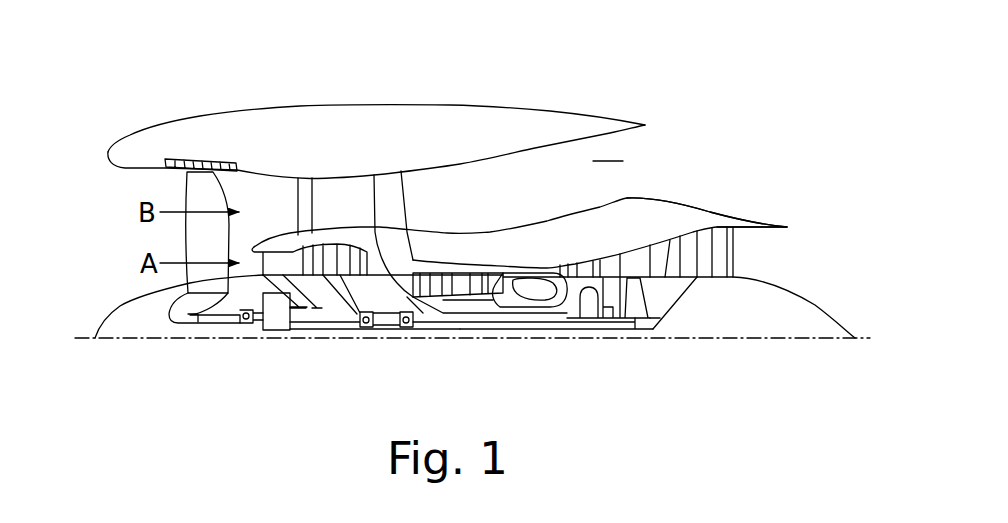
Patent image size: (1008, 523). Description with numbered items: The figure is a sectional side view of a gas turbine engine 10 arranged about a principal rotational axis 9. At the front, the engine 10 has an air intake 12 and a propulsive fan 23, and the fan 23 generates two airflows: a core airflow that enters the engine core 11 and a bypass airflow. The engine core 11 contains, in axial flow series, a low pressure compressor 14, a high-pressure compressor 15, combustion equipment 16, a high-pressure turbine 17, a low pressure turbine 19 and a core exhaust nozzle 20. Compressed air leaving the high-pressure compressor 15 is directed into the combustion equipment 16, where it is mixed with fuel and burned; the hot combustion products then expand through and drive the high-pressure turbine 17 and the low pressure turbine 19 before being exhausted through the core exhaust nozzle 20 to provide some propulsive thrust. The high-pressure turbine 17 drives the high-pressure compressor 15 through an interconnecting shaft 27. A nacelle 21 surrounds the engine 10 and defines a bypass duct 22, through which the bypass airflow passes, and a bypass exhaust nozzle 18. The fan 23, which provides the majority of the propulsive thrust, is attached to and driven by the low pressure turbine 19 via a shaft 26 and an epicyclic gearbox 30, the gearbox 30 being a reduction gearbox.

The principal rotational axis 9 is at (755, 340).
The gas turbine engine 10 is at (157, 115).
The engine core 11 is at (545, 245).
The air intake 12 is at (115, 184).
The low pressure compressor 14 is at (333, 260).
The high-pressure compressor 15 is at (467, 283).
The combustion equipment 16 is at (530, 284).
The high-pressure turbine 17 is at (587, 268).
The bypass exhaust nozzle 18 is at (748, 117).
The low pressure turbine 19 is at (707, 265).
The core exhaust nozzle 20 is at (796, 263).
The nacelle 21 is at (387, 118).
The bypass duct 22 is at (439, 204).
The propulsive fan 23 is at (188, 248).
The shaft 26 is at (433, 329).
The interconnecting shaft 27 is at (493, 329).
The epicyclic gearbox 30 is at (275, 318).